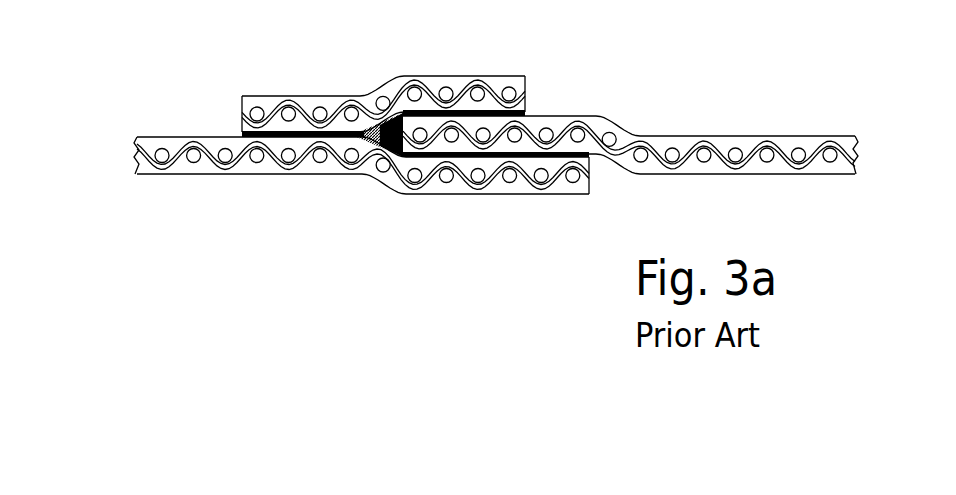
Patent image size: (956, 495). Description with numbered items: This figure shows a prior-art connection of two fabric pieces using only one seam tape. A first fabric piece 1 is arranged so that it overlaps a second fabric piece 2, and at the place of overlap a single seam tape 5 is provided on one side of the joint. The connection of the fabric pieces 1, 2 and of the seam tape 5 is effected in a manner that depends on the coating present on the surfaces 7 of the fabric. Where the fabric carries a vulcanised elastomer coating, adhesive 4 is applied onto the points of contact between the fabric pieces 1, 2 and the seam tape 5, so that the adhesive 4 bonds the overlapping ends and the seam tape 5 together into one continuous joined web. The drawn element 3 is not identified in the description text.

The first belt 1 is at (866, 147).
The second belt 2 is at (134, 150).
The upper ply / splice strip 3 is at (360, 110).
The adhesive filler wedge 4 is at (387, 137).
The end of splice strip 5 is at (527, 98).
The adhesive layer 7 is at (208, 131).